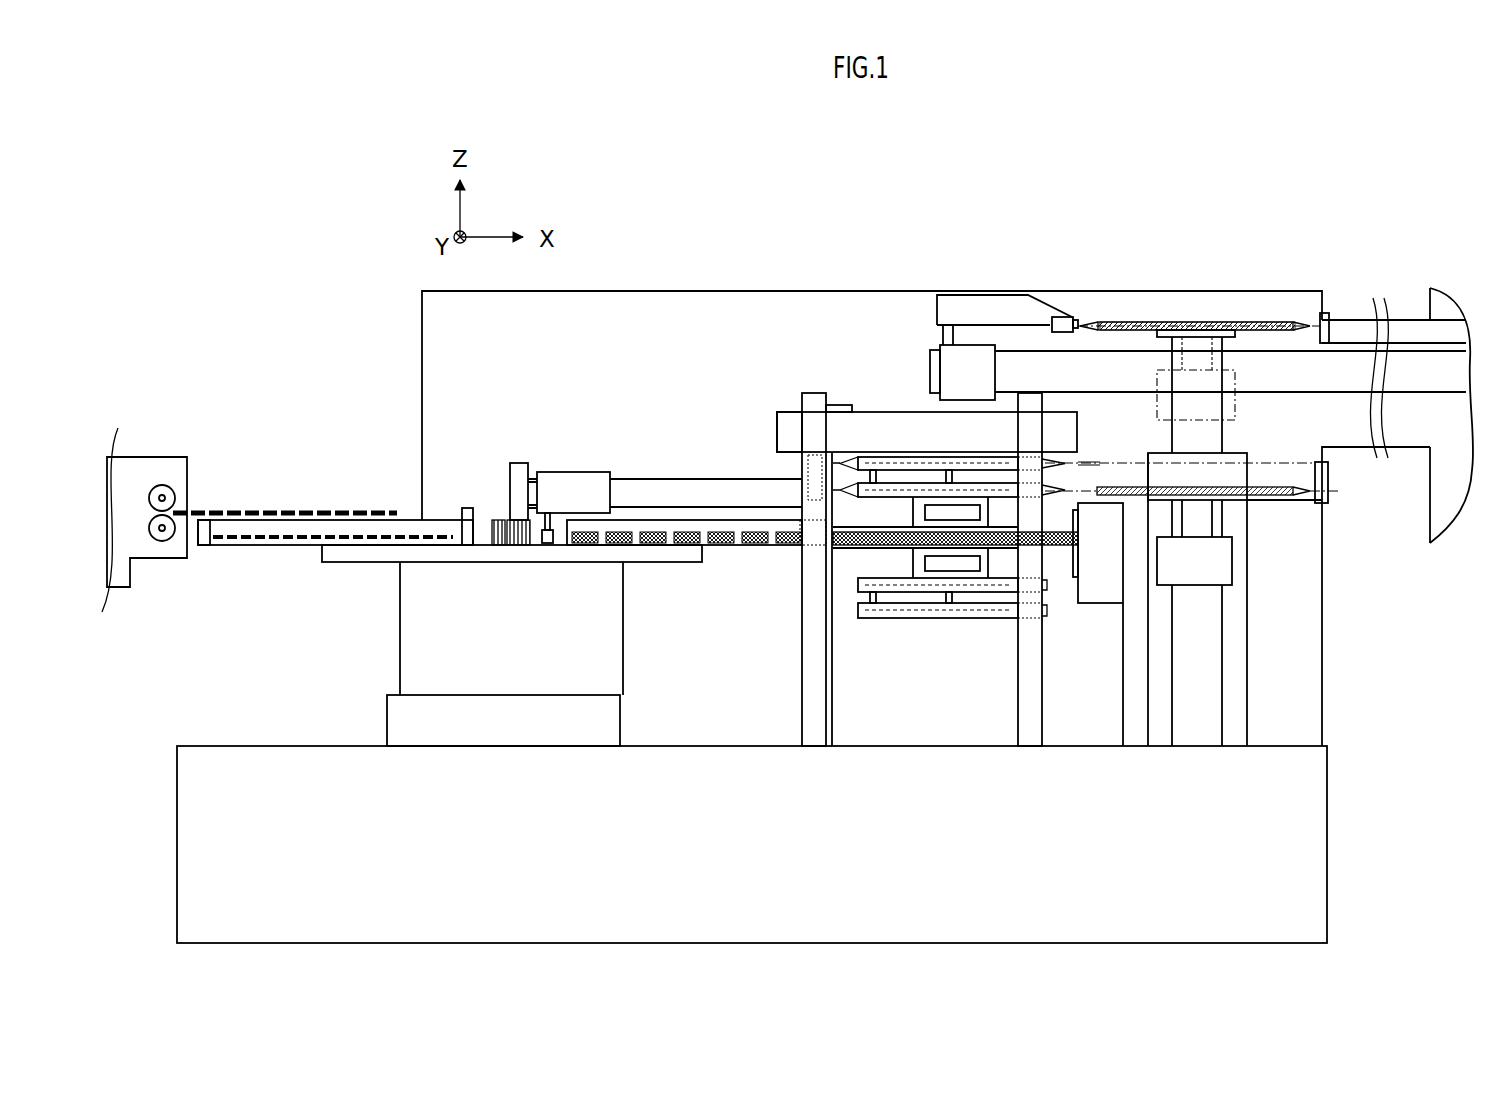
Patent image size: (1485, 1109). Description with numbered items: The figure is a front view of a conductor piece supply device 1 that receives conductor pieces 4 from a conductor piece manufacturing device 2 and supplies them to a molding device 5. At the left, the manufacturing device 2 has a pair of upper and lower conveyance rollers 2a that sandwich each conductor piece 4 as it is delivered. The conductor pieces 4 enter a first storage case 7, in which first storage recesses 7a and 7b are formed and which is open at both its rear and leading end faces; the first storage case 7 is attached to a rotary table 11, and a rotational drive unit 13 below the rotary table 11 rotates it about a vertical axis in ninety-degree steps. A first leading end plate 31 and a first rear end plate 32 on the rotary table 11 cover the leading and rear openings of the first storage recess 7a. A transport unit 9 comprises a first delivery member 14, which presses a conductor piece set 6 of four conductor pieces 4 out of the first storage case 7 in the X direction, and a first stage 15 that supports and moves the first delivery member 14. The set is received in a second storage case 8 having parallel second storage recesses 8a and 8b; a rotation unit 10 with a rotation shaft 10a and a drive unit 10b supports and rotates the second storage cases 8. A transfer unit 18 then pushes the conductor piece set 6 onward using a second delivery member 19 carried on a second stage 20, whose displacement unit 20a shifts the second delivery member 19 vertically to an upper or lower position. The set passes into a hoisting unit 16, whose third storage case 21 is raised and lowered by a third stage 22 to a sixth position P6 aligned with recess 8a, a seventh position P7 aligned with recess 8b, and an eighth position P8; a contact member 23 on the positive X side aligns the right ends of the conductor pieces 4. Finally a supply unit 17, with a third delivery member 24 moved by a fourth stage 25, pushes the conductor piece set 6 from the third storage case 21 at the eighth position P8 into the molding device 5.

The conductor piece supply device 1 is at (1142, 185).
The conductor piece manufacturing device 2 is at (188, 446).
The conveyance rollers 2a is at (162, 485).
The conductor piece 4 is at (322, 512).
The molding device 5 is at (1414, 281).
The conductor piece set 6 is at (773, 598).
The first storage case 7 is at (256, 518).
The first storage recess 7a is at (498, 547).
The first storage recess 7b is at (520, 547).
The second storage case 8 is at (920, 368).
The second storage recess 8a is at (888, 481).
The second storage recess 8b is at (917, 457).
The transport unit 9 is at (531, 451).
The rotation unit 10 is at (1063, 603).
The rotation shaft 10a is at (903, 529).
The drive unit 10b is at (1102, 605).
The rotary table 11 is at (338, 563).
The rotational drive unit 13 is at (387, 708).
The first delivery member 14 is at (549, 528).
The first stage 15 is at (565, 472).
The hoisting unit 16 is at (1275, 543).
The supply unit 17 is at (919, 304).
The transfer unit 18 is at (784, 401).
The second delivery member 19 is at (808, 490).
The second stage 20 is at (852, 410).
The displacement unit 20a is at (799, 468).
The third storage case 21 is at (1186, 321).
The third stage 22 is at (1232, 571).
The contact member 23 is at (1330, 503).
The third delivery member 24 is at (1063, 316).
The fourth stage 25 is at (943, 365).
The first leading end plate 31 is at (467, 507).
The first rear end plate 32 is at (204, 518).
The sixth position P6 is at (1330, 493).
The seventh position P7 is at (1330, 468).
The eighth position P8 is at (1345, 320).